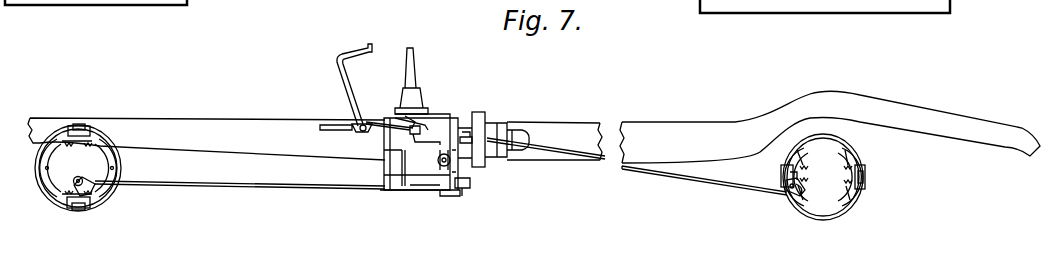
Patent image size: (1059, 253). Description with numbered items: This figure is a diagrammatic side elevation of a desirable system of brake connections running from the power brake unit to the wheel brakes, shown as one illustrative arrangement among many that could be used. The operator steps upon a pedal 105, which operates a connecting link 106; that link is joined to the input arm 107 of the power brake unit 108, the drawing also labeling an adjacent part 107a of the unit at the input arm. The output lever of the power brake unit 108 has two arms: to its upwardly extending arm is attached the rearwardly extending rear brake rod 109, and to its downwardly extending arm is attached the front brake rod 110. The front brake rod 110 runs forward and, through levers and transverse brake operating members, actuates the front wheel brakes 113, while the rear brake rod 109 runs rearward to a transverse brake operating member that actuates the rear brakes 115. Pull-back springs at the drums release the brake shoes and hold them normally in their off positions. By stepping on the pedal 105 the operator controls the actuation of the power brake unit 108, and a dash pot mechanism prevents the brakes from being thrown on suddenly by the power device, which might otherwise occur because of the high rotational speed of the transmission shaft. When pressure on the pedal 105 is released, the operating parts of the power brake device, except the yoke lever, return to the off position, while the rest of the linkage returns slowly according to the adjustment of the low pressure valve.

The pedal 105 is at (340, 50).
The connecting link 106 is at (413, 128).
The input arm 107 is at (450, 118).
The shaft bearing 107a is at (482, 139).
The power brake unit 108 is at (460, 188).
The rear brake rod 109 is at (630, 170).
The front brake rod 110 is at (236, 182).
The front wheel brakes 113 is at (112, 166).
The rear brakes 115 is at (840, 140).